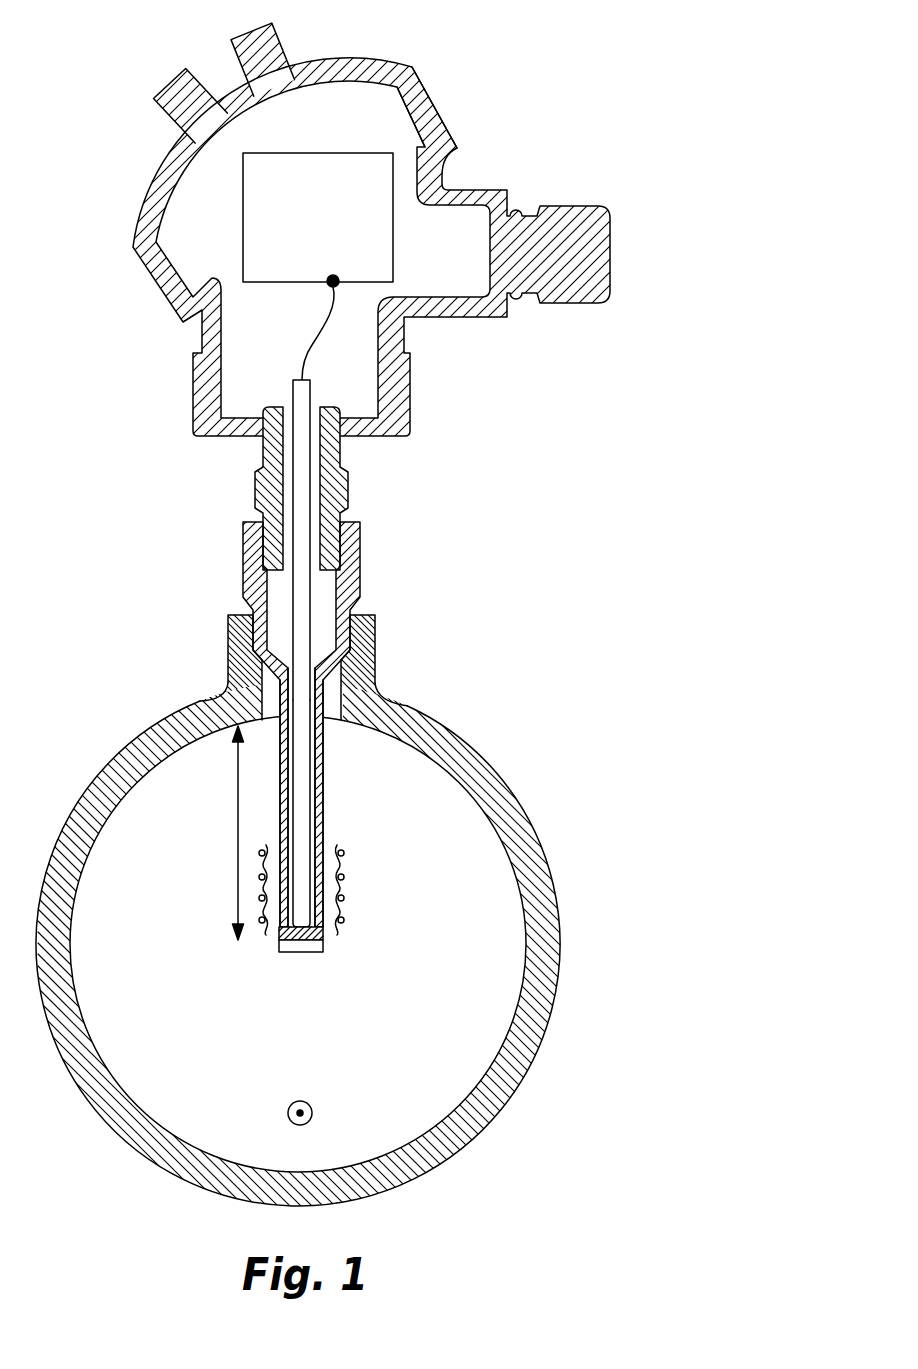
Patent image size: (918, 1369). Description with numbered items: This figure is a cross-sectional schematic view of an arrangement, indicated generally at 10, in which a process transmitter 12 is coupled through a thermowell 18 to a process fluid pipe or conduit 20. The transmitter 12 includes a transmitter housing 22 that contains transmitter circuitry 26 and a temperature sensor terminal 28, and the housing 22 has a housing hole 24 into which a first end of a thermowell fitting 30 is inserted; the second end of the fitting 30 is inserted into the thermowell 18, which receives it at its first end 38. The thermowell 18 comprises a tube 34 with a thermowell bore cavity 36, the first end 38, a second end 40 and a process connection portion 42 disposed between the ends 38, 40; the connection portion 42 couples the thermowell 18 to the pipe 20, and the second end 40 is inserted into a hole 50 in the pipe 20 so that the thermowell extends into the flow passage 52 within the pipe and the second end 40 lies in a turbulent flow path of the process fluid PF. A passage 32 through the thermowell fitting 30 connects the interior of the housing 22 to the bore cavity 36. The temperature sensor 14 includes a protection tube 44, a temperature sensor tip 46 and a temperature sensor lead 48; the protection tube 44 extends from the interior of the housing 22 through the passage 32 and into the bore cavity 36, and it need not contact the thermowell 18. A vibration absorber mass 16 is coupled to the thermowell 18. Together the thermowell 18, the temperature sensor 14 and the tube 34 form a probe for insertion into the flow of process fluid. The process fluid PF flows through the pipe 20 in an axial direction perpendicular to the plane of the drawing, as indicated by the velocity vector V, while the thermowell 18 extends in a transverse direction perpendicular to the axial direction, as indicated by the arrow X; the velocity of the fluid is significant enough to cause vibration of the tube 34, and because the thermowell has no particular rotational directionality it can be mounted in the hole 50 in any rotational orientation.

The sensor assembly 10 is at (540, 78).
The process transmitter 12 is at (376, 60).
The temperature sensor 14 is at (312, 392).
The vibration absorber mass 16 is at (298, 952).
The thermowell 18 is at (362, 541).
The process fluid pipe 20 is at (511, 782).
The transmitter housing 22 is at (437, 98).
The housing hole 24 is at (257, 425).
The transmitter circuitry 26 is at (302, 203).
The temperature sensor terminal 28 is at (331, 279).
The thermowell fitting 30 is at (350, 478).
The passage 32 is at (317, 480).
The tube 34 is at (322, 820).
The thermowell bore cavity 36 is at (323, 583).
The first end 38 is at (245, 565).
The second end 40 is at (277, 944).
The process connection portion 42 is at (256, 650).
The protection tube 44 is at (310, 643).
The temperature sensor tip 46 is at (305, 930).
The temperature sensor lead 48 is at (327, 300).
The hole 50 is at (222, 703).
The flow passage 52 is at (169, 846).
The arrow X is at (238, 797).
The process fluid PF is at (343, 890).
The velocity vector V is at (313, 1112).